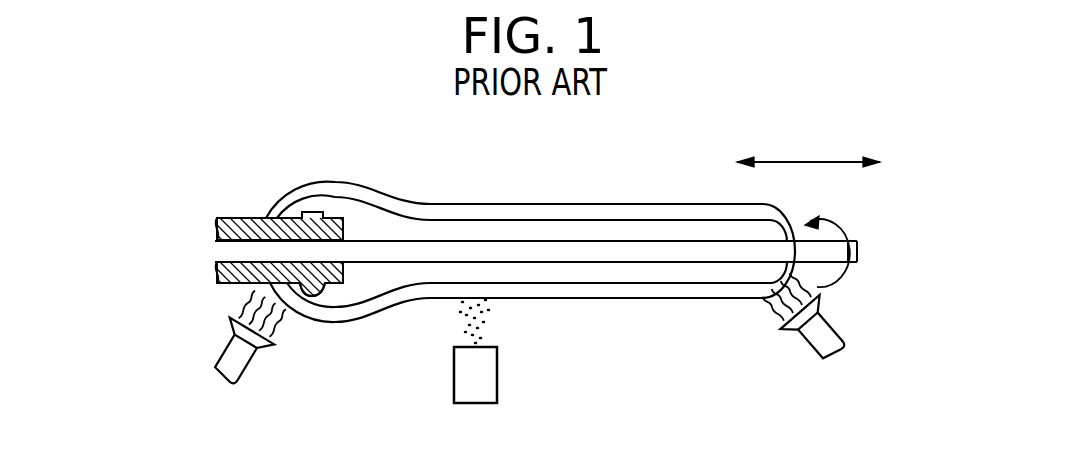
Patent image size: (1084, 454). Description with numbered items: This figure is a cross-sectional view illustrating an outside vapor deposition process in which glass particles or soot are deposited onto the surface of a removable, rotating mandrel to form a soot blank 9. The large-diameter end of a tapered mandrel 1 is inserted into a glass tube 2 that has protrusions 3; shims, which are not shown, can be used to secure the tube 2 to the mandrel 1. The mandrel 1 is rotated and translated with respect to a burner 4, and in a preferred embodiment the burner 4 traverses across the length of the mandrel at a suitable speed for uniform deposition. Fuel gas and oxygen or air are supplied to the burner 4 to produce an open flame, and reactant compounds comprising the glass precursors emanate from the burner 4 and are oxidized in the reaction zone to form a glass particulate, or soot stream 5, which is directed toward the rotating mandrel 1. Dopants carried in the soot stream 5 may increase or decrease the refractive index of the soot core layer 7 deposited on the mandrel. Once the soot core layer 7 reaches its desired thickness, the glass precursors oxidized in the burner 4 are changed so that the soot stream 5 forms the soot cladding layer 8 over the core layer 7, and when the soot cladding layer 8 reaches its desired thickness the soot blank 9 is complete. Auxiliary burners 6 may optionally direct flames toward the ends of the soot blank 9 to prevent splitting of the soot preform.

The tapered mandrel 1 is at (660, 250).
The glass tube 2 is at (240, 218).
The protrusions 3 is at (315, 321).
The burner 4 is at (466, 391).
The soot stream 5 is at (485, 320).
The auxiliary burners 6 is at (228, 353).
The soot core layer 7 is at (603, 271).
The soot cladding layer 8 is at (712, 294).
The soot blank 9 is at (553, 204).